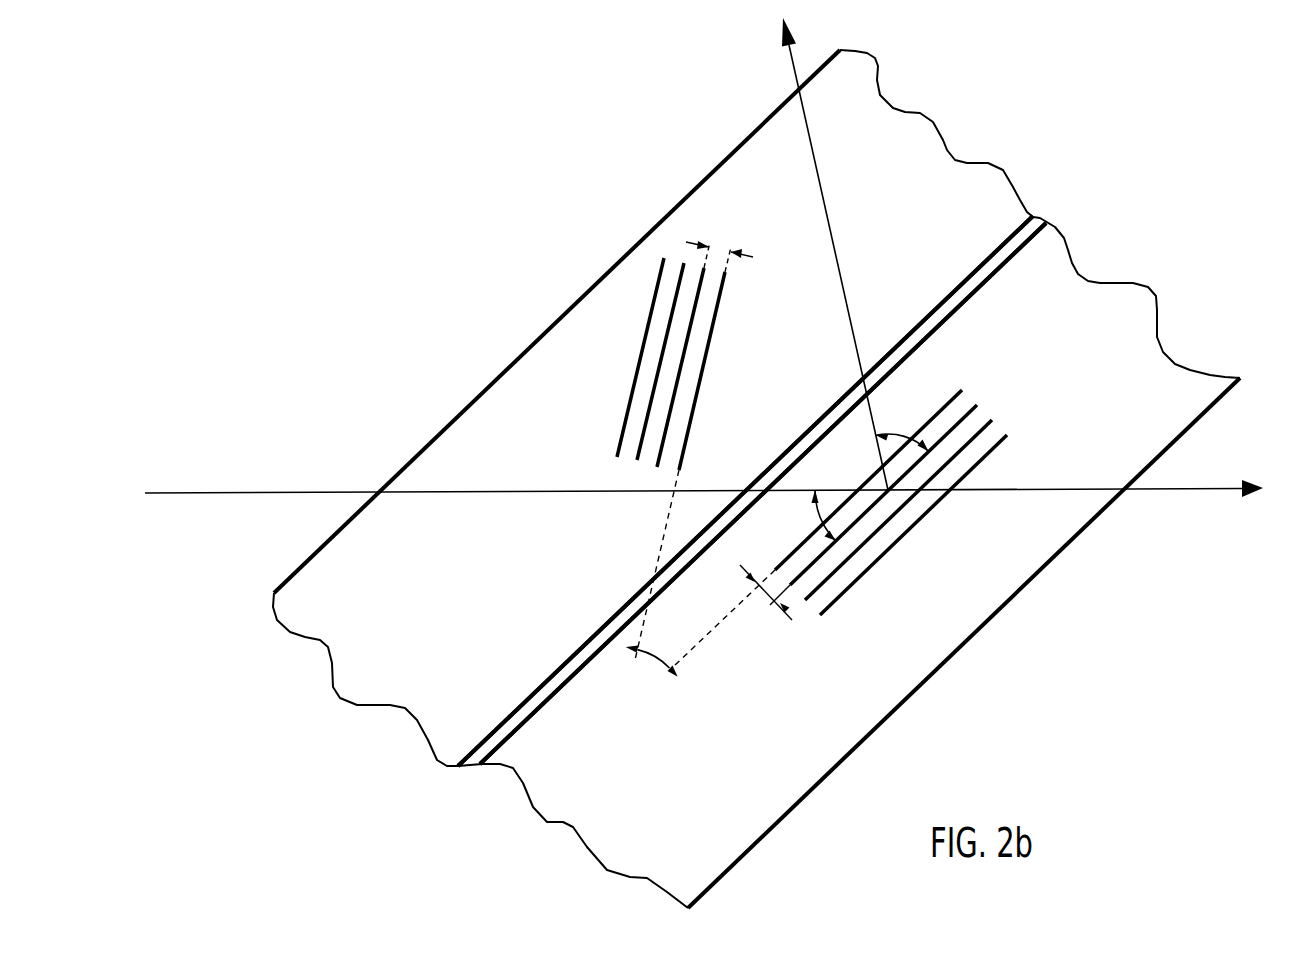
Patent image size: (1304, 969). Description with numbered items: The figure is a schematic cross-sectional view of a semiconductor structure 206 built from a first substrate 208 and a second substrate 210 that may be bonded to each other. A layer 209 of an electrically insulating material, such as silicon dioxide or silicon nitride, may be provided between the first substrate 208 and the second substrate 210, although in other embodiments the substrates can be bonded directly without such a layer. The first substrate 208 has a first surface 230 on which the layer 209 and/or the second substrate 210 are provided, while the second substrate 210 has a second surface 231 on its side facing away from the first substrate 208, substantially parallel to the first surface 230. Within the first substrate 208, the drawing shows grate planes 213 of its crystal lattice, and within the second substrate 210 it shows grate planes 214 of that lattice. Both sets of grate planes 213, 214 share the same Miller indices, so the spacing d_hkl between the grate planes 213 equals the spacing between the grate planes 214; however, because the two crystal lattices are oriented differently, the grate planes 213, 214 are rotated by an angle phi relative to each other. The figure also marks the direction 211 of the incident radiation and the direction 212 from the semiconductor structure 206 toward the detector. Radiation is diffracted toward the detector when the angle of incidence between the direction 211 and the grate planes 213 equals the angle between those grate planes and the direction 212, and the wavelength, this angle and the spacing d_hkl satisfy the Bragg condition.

The semiconductor structure 206 is at (1153, 206).
The first substrate 208 is at (1157, 293).
The layer of electrically insulating material 209 is at (1033, 214).
The second substrate 210 is at (945, 147).
The direction of the incident radiation 211 is at (1203, 490).
The direction from the semiconductor structure to the detector 212 is at (793, 65).
The grate planes of the crystal lattice of the first substrate 213 is at (863, 622).
The grate planes of the crystal lattice of the second substrate 214 is at (608, 427).
The first surface 230 is at (477, 767).
The second surface 231 is at (274, 593).